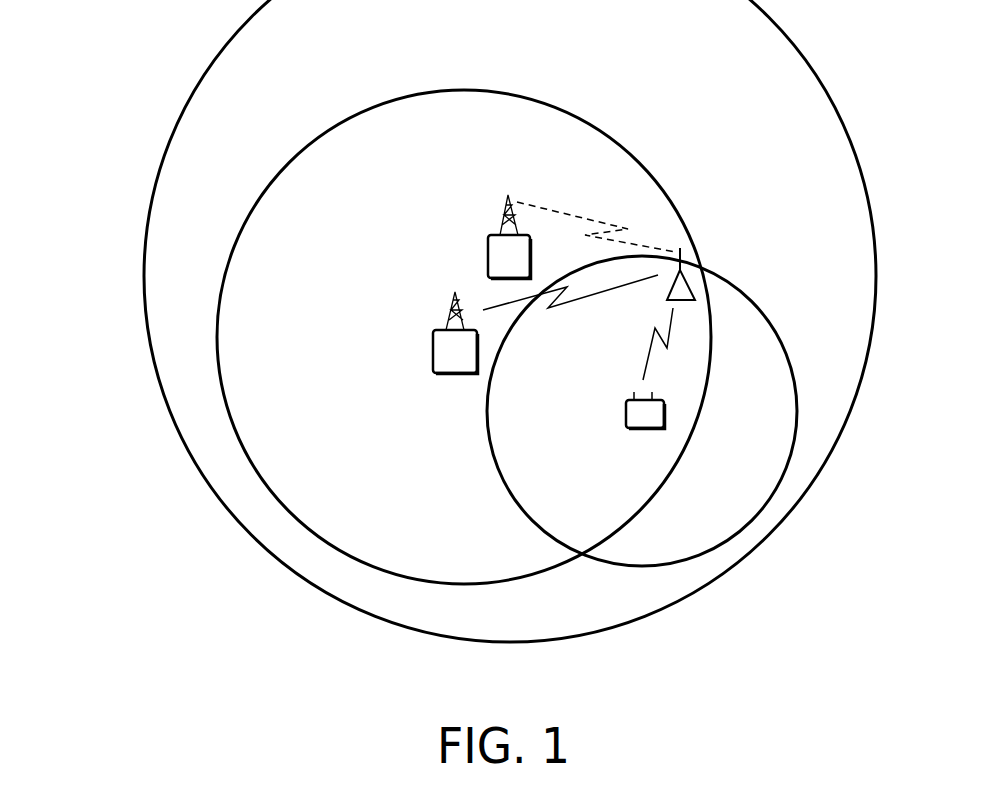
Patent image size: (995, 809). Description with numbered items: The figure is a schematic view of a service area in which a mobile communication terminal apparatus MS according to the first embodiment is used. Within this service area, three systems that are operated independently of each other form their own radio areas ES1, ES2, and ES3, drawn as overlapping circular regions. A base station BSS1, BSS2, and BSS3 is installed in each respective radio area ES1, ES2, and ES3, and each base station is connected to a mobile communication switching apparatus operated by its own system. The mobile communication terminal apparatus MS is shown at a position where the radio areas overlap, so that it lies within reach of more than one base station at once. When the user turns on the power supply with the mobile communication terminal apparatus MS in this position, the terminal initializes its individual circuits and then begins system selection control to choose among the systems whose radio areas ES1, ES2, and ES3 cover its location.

The radio area ES1 is at (333, 547).
The radio area ES2 is at (715, 547).
The radio area ES3 is at (150, 203).
The base station BSS1 is at (440, 353).
The base station BSS2 is at (635, 431).
The base station BSS3 is at (473, 237).
The mobile communication terminal apparatus MS is at (658, 284).